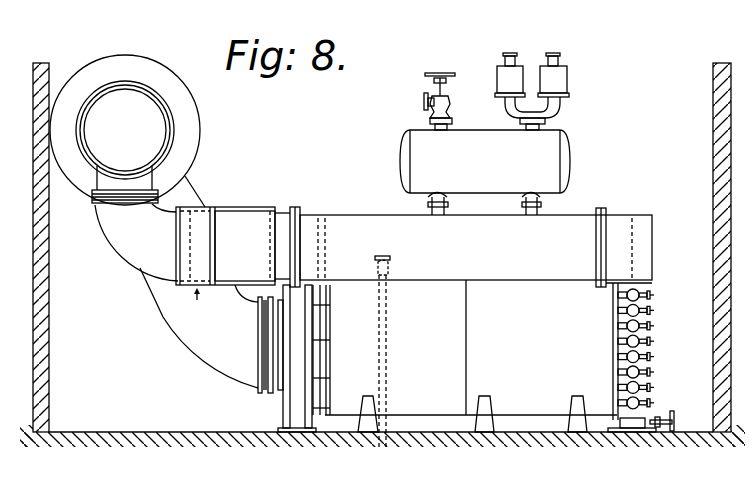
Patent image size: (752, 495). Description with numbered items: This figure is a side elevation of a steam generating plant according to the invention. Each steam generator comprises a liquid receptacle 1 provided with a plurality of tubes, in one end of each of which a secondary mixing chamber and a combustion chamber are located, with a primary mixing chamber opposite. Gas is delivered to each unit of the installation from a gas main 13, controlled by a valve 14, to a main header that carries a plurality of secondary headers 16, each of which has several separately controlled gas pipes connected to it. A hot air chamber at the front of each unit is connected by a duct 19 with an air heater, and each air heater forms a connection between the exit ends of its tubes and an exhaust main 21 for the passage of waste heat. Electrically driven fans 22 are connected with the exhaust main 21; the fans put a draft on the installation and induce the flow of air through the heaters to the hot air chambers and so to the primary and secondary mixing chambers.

The liquid receptacle 1 is at (535, 408).
The gas main 13 is at (638, 432).
The valve 14 is at (677, 408).
The secondary headers 16 is at (650, 362).
The duct 19 is at (507, 270).
The exhaust main 21 is at (127, 168).
The electrically driven fans 22 is at (292, 398).